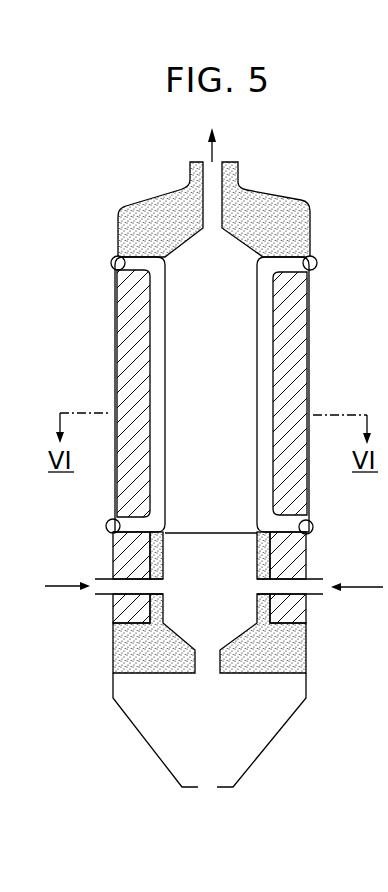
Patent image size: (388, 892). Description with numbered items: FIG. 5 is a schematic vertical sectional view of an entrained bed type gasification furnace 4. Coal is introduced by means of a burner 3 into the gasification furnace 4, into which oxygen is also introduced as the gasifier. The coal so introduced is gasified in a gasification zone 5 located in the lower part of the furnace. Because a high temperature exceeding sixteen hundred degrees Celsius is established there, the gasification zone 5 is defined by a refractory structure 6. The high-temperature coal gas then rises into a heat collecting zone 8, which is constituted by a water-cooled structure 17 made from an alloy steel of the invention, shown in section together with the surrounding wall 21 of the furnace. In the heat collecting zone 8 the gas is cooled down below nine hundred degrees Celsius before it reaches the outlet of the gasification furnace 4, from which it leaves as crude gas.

The burner 3 is at (105, 577).
The gasification furnace 4 is at (318, 198).
The gasification zone 5 is at (242, 566).
The refractory structure 6 is at (293, 658).
The heat collecting zone 8 is at (180, 320).
The water-cooled structure 17 is at (267, 380).
The tube 21 is at (310, 322).